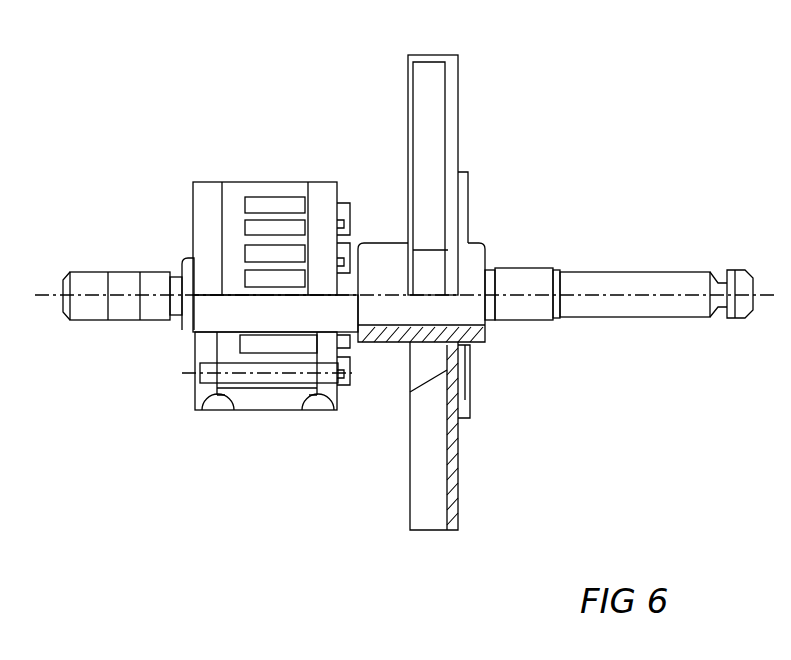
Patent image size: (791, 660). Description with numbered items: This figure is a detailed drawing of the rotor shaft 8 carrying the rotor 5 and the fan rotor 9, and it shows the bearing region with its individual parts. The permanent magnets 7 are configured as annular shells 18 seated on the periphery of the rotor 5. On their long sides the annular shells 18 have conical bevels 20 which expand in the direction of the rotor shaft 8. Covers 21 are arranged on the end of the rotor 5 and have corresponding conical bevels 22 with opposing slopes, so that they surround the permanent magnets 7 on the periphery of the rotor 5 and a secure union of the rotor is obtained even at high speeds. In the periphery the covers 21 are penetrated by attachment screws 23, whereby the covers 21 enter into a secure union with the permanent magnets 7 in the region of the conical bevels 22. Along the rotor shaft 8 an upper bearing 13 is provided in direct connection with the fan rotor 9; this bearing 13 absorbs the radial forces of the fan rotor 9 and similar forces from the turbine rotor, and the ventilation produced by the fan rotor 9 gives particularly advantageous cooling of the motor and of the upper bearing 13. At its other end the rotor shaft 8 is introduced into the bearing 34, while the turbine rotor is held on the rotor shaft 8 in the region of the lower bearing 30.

The rotor 5 is at (157, 158).
The permanent magnets 7 is at (277, 395).
The rotor shaft 8 is at (652, 285).
The fan rotor 9 is at (450, 120).
The upper bearing 13 is at (538, 322).
The annular shells 18 is at (252, 190).
The conical bevels 20 is at (237, 402).
The covers 21 is at (318, 210).
The conical bevels 22 is at (202, 410).
The attachment screws 23 is at (346, 375).
The lower bearing 30 is at (740, 318).
The bearing 34 is at (95, 320).